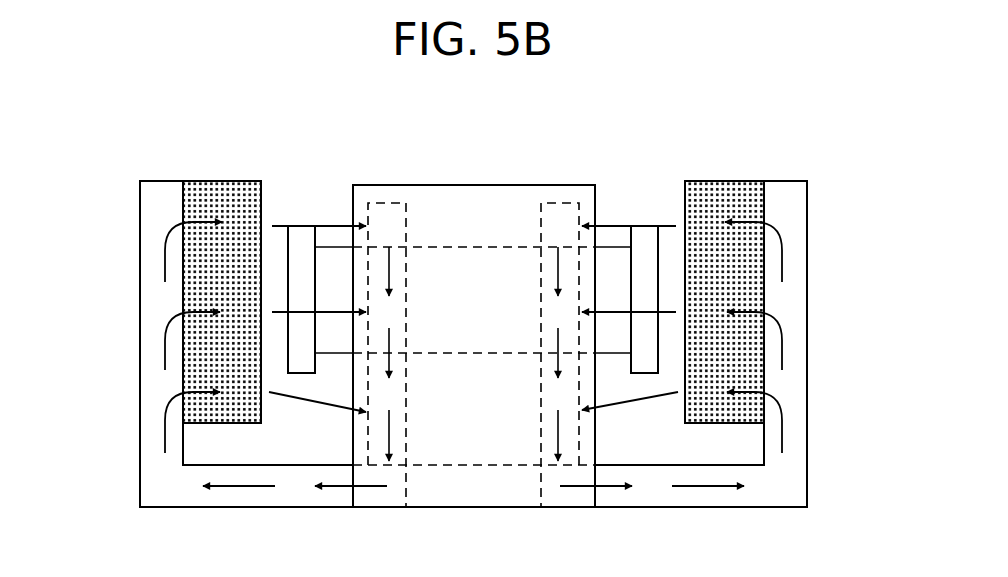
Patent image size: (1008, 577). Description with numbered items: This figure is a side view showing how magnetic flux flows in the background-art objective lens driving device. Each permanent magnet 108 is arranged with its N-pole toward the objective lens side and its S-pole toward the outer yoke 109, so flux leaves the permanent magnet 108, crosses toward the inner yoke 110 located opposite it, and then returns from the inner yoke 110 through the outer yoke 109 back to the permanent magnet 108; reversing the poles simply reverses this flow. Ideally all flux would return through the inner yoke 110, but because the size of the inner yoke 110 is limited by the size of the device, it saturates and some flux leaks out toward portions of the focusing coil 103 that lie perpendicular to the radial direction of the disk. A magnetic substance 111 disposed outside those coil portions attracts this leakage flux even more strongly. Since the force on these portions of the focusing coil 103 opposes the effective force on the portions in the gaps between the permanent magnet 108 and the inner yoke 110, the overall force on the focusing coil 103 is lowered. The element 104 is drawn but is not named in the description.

The focusing coil 103 is at (442, 247).
The gas inlet block 104 is at (302, 238).
The permanent magnet 108 is at (228, 192).
The outer yoke 109 is at (148, 223).
The inner yoke 110 is at (391, 201).
The magnetic substance 111 is at (472, 185).